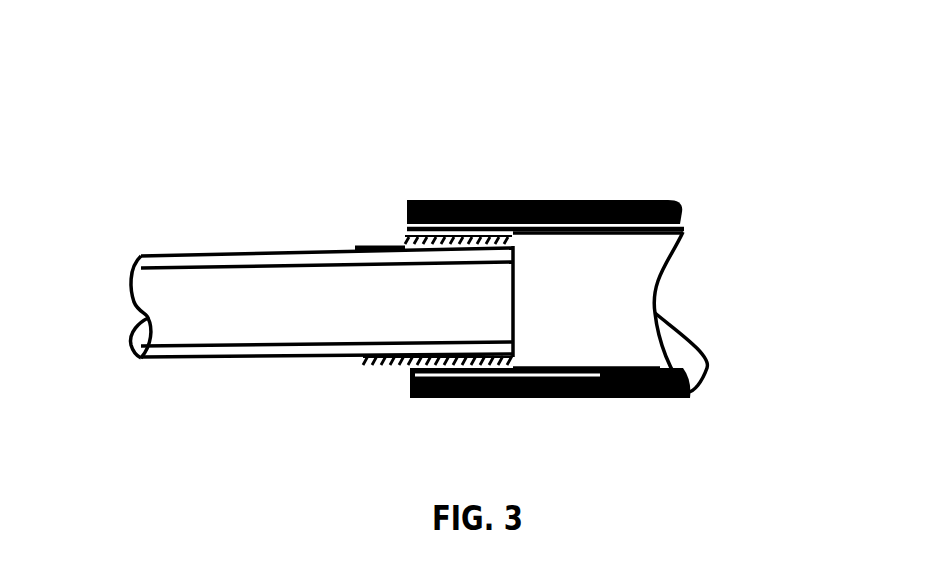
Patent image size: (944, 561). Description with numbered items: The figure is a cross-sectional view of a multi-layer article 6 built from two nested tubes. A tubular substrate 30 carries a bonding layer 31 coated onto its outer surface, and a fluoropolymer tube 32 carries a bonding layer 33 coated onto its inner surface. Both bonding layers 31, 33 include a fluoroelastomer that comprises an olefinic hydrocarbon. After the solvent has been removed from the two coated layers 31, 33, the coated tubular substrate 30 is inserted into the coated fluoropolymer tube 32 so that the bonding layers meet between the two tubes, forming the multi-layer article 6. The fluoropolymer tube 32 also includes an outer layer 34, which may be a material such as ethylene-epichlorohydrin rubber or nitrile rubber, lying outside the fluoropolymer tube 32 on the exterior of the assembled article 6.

The multi-layer article 6 is at (415, 104).
The tubular substrate 30 is at (213, 257).
The bonding layer 31 is at (373, 246).
The fluoropolymer tube 32 is at (687, 240).
The bonding layer 33 is at (525, 200).
The outer layer 34 is at (653, 194).